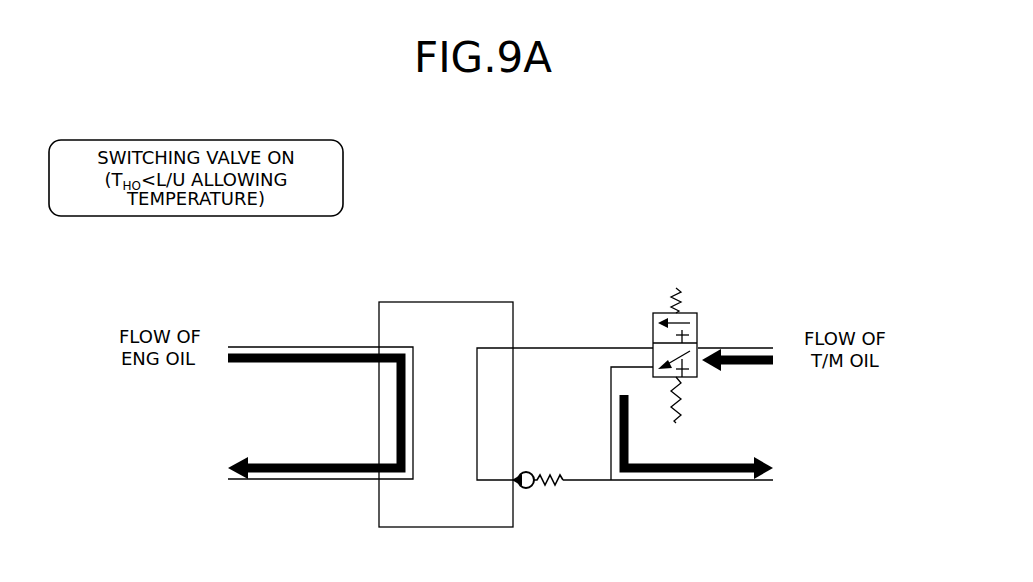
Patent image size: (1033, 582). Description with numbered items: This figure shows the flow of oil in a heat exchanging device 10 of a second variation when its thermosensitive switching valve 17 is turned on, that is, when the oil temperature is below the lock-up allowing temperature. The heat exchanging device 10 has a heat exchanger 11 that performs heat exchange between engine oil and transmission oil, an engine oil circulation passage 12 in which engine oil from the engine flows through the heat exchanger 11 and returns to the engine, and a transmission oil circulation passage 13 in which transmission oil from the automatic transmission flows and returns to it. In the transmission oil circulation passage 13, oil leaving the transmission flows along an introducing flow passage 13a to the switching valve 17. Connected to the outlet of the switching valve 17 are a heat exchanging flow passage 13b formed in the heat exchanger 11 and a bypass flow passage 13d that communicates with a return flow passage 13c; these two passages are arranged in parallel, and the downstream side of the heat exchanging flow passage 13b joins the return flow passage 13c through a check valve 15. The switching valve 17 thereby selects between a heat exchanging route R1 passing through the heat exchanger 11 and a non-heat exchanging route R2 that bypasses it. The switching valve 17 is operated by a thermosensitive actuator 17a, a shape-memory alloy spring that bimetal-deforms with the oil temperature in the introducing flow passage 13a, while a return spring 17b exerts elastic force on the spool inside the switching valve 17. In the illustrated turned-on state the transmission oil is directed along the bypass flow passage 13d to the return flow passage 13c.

The heat exchanging device 10 is at (533, 226).
The heat exchanger 11 is at (444, 301).
The engine oil circulation passage 12 is at (281, 505).
The transmission oil circulation passage 13 is at (604, 530).
The introducing flow passage 13a is at (752, 347).
The heat exchanging flow passage 13b is at (477, 365).
The return flow passage 13c is at (707, 483).
The bypass flow passage 13d is at (611, 387).
The check valve 15 is at (541, 505).
The thermosensitive switching valve 17 is at (716, 394).
The thermosensitive actuator 17a is at (685, 411).
The return spring 17b is at (676, 288).
The heat exchanging route R1 is at (605, 338).
The non-heat exchanging route R2 is at (598, 418).